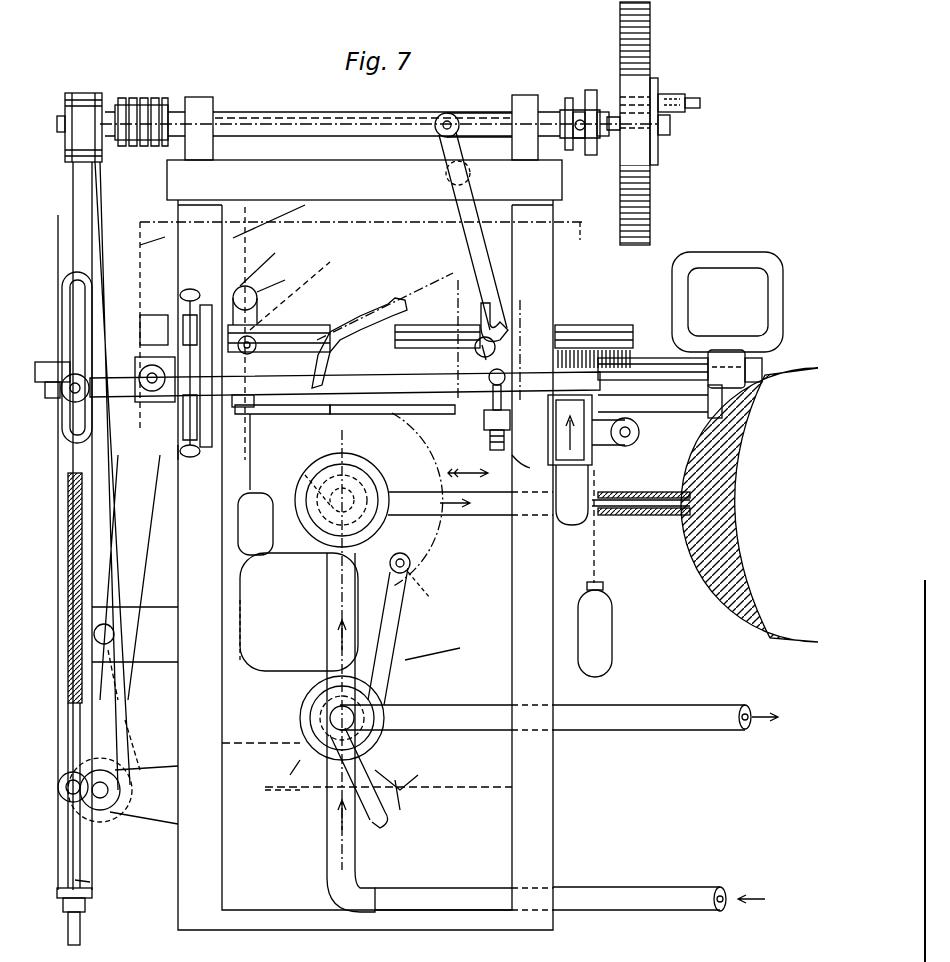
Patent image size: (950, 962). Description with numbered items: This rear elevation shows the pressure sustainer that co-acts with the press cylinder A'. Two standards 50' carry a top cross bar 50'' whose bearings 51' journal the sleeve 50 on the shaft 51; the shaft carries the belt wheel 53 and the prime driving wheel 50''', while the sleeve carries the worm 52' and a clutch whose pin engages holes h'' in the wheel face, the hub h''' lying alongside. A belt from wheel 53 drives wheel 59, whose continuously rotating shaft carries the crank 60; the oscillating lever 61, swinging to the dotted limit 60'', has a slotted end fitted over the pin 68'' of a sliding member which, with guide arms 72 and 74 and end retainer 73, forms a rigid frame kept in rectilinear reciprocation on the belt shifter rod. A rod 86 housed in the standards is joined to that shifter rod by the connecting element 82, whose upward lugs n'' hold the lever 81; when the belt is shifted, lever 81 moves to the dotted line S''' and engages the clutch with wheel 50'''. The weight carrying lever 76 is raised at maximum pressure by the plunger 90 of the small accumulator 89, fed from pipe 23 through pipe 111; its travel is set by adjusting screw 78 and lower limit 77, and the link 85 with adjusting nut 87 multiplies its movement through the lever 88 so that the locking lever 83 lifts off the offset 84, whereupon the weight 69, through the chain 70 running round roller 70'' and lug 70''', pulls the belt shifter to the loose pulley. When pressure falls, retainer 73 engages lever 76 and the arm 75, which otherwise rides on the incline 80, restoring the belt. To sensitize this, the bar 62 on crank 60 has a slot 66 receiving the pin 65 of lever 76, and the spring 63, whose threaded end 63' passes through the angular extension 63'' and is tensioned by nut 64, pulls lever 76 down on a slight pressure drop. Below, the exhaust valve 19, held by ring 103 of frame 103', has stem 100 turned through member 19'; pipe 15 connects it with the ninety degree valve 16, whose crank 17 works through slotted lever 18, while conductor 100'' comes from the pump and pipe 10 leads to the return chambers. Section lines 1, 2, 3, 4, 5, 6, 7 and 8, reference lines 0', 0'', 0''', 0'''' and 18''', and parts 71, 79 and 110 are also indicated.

The driving belt wheel 50''' is at (670, 123).
The shaft hub h''' is at (696, 106).
The clutch holes h'' is at (606, 141).
The sleeve 50 is at (380, 109).
The shaft 51 is at (362, 99).
The belt wheel 53 is at (95, 93).
The worm 52' is at (141, 106).
The bearings 51' is at (374, 110).
The lever 81 is at (488, 248).
The top cross bar 50'' is at (364, 180).
The standards 50' is at (365, 565).
The section line 3 is at (140, 222).
The dashed guide 5 is at (257, 329).
The dotted position line S''' is at (385, 288).
The section line 4 is at (586, 222).
The section line 1 is at (464, 337).
The section line 2 is at (490, 376).
The arc path 0'''' is at (423, 500).
The slot 66 is at (78, 308).
The oscillating lever 61 is at (128, 570).
The spring 63 is at (123, 588).
The pin 65 is at (148, 360).
The stop 88 is at (51, 368).
The small accumulator 89 is at (345, 418).
The pin 68'' is at (150, 387).
The lower limit 77 is at (190, 458).
The belt wheel 59 is at (112, 810).
The crank 60 is at (112, 772).
The dotted limit line 60'' is at (151, 740).
The bar 62 is at (82, 866).
The threaded end of spring 63' is at (115, 885).
The angularly extended portion 63'' is at (116, 897).
The nut 64 is at (85, 905).
The end retainer 73 is at (330, 325).
The adjusting screw 78 is at (268, 261).
The lever 75 is at (282, 279).
The roller 79 is at (250, 336).
The guide arm 72 is at (280, 325).
The incline 80 is at (355, 318).
The offset 84 is at (468, 325).
The locking lever 83 is at (495, 343).
The lugs n'' is at (513, 301).
The connecting element 82 is at (500, 330).
The link 85 is at (502, 400).
The rod 86 is at (508, 425).
The adjusting nut 87 is at (526, 470).
The weight carrying lever 76 is at (398, 414).
The section line 7 is at (300, 432).
The section line 6 is at (246, 427).
The guide arm 74 is at (257, 484).
The rack 71 is at (605, 335).
The pipe 111 is at (575, 470).
The weight 69 is at (613, 620).
The roller 70'' is at (624, 444).
The plunger 90 is at (653, 401).
The lug 70''' is at (716, 384).
The chain 70 is at (641, 524).
The cylinder A' is at (749, 505).
The pipe 23 is at (663, 517).
The exhaust valve 19 is at (342, 650).
The ring 103 is at (296, 532).
The frame 103' is at (252, 649).
The pipe 15 is at (320, 628).
The valve actuating member 19' is at (401, 547).
The slotted lever 18 is at (401, 636).
The axis 0''' is at (434, 590).
The axis 0' is at (443, 648).
The ninety degree valve 16 is at (370, 715).
The crank 17 is at (368, 743).
The axis 0'' is at (415, 775).
The lever 18''' is at (403, 802).
The pipe 110 is at (285, 769).
The section line 8 is at (272, 790).
The valve stem 100 is at (324, 732).
The pipe 100'' is at (464, 878).
The pipe 10 is at (632, 725).